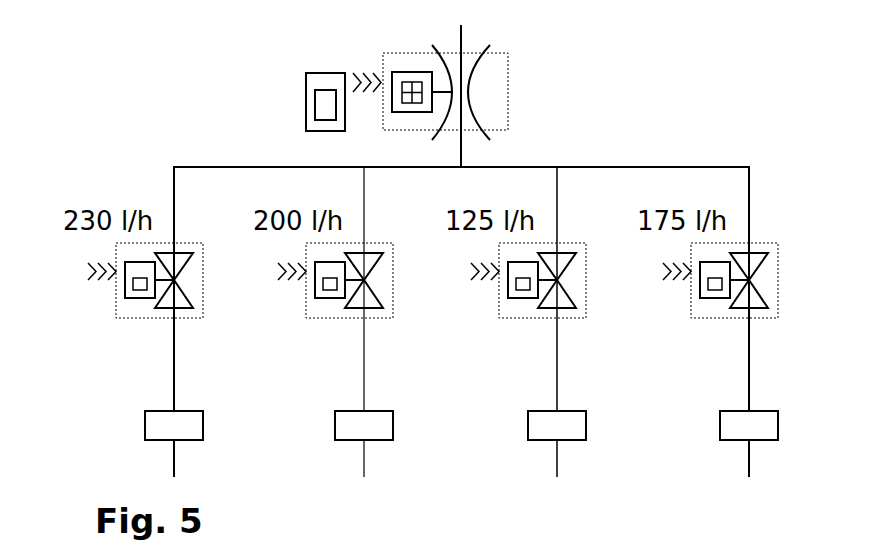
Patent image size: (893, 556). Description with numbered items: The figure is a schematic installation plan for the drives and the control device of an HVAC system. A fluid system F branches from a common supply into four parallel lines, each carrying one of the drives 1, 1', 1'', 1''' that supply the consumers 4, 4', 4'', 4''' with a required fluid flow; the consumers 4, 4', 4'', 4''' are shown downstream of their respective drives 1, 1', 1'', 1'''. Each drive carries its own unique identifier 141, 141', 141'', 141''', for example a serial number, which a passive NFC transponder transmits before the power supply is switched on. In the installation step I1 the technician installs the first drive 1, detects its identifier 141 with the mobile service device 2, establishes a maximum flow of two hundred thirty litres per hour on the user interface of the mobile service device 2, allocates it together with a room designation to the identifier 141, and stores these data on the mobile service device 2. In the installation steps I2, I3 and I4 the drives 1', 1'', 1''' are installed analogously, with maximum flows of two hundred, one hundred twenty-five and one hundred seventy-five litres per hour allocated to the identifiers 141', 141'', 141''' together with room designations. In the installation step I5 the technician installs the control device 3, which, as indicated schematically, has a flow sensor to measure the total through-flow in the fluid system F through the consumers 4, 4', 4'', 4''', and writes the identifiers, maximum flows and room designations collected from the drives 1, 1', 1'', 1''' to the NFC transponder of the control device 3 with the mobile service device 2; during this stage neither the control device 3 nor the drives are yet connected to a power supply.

The drive 1 is at (185, 322).
The drive 1' is at (378, 322).
The drive 1'' is at (575, 322).
The drive 1''' is at (770, 322).
The mobile service device 2 is at (296, 130).
The control device 3 is at (419, 46).
The consumer 4 is at (150, 437).
The consumer 4' is at (340, 437).
The consumer 4'' is at (532, 437).
The consumer 4''' is at (724, 437).
The unique identifier 141 is at (134, 300).
The unique identifier 141' is at (325, 300).
The unique identifier 141'' is at (515, 300).
The unique identifier 141''' is at (708, 300).
The fluid system F is at (210, 165).
The installation step I1 is at (85, 291).
The installation step I2 is at (280, 291).
The installation step I3 is at (472, 291).
The installation step I4 is at (664, 291).
The installation step I5 is at (544, 102).